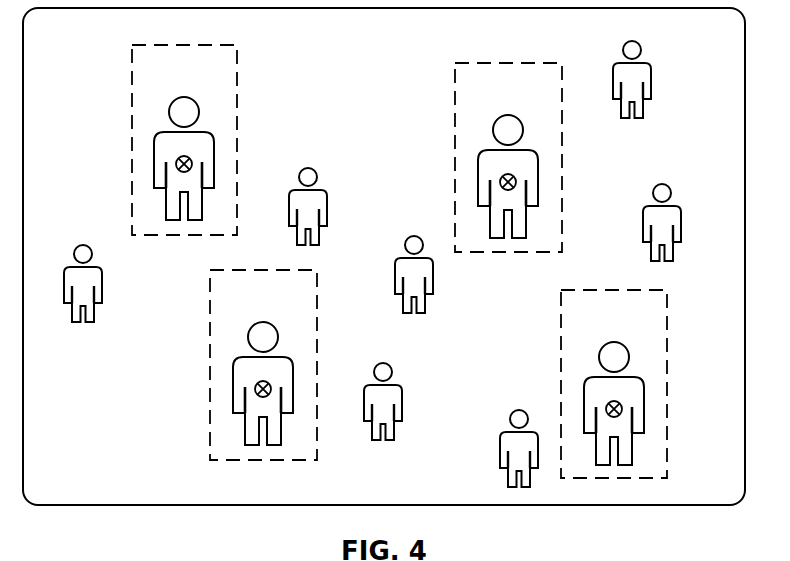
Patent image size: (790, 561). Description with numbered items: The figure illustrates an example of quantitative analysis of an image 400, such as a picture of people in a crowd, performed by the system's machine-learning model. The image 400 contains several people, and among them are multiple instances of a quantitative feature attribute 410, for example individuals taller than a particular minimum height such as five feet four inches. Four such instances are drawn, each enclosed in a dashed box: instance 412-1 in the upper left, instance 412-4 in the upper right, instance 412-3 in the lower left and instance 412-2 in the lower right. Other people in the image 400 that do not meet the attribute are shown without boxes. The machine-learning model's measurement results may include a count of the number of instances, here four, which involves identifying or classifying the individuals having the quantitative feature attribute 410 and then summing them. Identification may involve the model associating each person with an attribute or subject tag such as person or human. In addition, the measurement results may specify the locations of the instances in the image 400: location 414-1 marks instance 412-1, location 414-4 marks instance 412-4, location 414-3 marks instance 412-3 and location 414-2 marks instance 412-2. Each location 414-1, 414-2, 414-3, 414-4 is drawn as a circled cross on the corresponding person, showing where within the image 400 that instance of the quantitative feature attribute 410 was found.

The image 400 is at (372, 54).
The quantitative feature attribute 410 is at (583, 403).
The instance 412-1 is at (162, 91).
The instance 412-2 is at (592, 334).
The instance 412-3 is at (241, 316).
The instance 412-4 is at (486, 109).
The location 414-1 is at (193, 163).
The location 414-2 is at (622, 407).
The location 414-3 is at (272, 387).
The location 414-4 is at (518, 182).